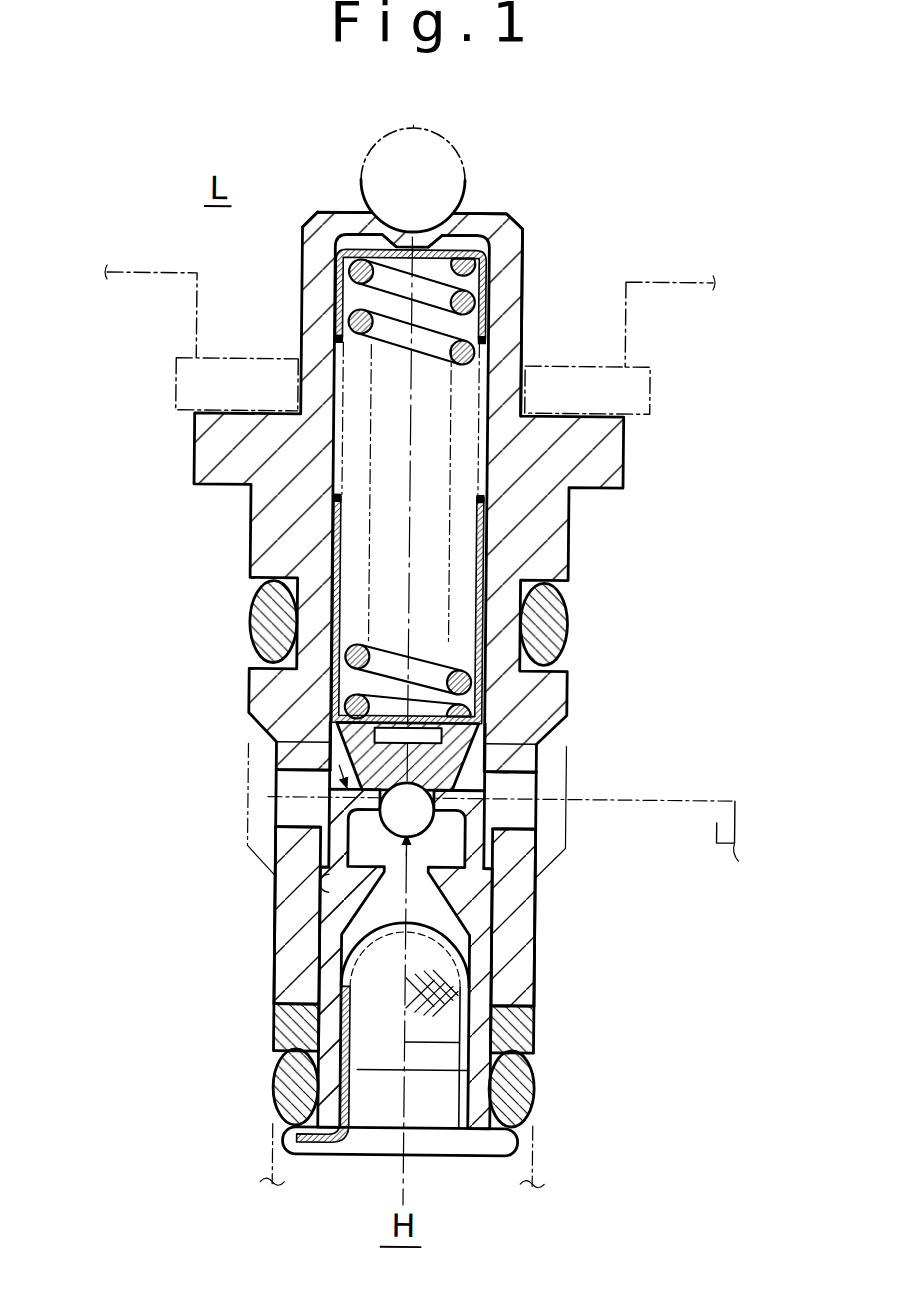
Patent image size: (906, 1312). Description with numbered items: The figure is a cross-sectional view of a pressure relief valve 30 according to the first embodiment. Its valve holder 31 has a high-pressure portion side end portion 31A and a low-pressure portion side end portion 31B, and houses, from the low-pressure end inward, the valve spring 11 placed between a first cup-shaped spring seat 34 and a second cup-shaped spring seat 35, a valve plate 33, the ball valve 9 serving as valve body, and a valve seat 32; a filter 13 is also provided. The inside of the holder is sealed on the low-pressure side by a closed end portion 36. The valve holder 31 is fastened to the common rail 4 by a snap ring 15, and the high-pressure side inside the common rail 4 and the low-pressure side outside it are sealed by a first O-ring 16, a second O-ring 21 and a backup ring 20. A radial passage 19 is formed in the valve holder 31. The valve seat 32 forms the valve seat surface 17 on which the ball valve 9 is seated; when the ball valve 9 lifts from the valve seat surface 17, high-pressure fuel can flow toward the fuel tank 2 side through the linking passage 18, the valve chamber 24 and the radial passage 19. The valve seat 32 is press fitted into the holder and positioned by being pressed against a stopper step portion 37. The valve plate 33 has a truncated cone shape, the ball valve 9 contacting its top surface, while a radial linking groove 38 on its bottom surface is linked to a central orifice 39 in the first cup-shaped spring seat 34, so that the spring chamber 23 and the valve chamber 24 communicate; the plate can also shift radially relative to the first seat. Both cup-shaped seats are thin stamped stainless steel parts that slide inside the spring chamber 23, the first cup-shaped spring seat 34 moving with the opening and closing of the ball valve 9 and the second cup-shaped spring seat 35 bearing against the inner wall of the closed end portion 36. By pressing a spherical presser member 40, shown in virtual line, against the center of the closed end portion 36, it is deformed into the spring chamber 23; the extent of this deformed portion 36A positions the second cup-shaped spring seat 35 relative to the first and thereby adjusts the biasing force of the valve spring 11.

The fuel tank 2 is at (733, 850).
The common rail 4 is at (683, 278).
The ball valve 9 is at (497, 870).
The valve spring 11 is at (342, 648).
The filter 13 is at (456, 1000).
The snap ring 15 is at (178, 378).
The first O-ring 16 is at (559, 627).
The valve seat surface 17 is at (270, 848).
The linking passage 18 is at (348, 940).
The radial passage 19 is at (305, 808).
The backup ring 20 is at (303, 1025).
The second O-ring 21 is at (300, 1088).
The spring chamber 23 is at (437, 506).
The valve chamber 24 is at (353, 762).
The pressure relief valve 30 is at (566, 197).
The valve holder 31 is at (573, 452).
The high-pressure portion side end portion 31A is at (553, 985).
The low-pressure portion side end portion 31B is at (538, 248).
The valve seat 32 is at (488, 905).
The valve plate 33 is at (460, 762).
The first cup-shaped spring seat 34 is at (491, 568).
The second cup-shaped spring seat 35 is at (491, 320).
The closed end portion 36 is at (479, 206).
The deformed portion 36A is at (410, 228).
The stopper step portion 37 is at (333, 893).
The radial linking groove 38 is at (398, 737).
The central orifice 39 is at (342, 680).
The spherical presser member 40 is at (376, 140).